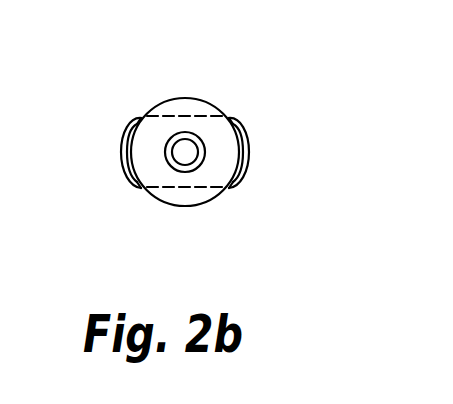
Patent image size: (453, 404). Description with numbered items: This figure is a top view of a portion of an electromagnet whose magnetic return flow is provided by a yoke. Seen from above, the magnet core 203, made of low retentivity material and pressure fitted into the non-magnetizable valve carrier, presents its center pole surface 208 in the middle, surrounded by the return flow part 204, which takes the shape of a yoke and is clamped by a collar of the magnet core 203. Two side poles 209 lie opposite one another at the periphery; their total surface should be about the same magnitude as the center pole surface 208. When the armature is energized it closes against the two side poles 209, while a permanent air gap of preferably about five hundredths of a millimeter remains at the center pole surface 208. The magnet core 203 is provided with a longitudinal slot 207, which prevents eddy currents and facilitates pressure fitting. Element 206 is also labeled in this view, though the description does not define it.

The magnet core 203 is at (198, 186).
The return flow part 204 is at (135, 119).
The body 206 is at (200, 165).
The longitudinal slot 207 is at (185, 139).
The center pole surface 208 is at (172, 168).
The side poles 209 is at (125, 138).